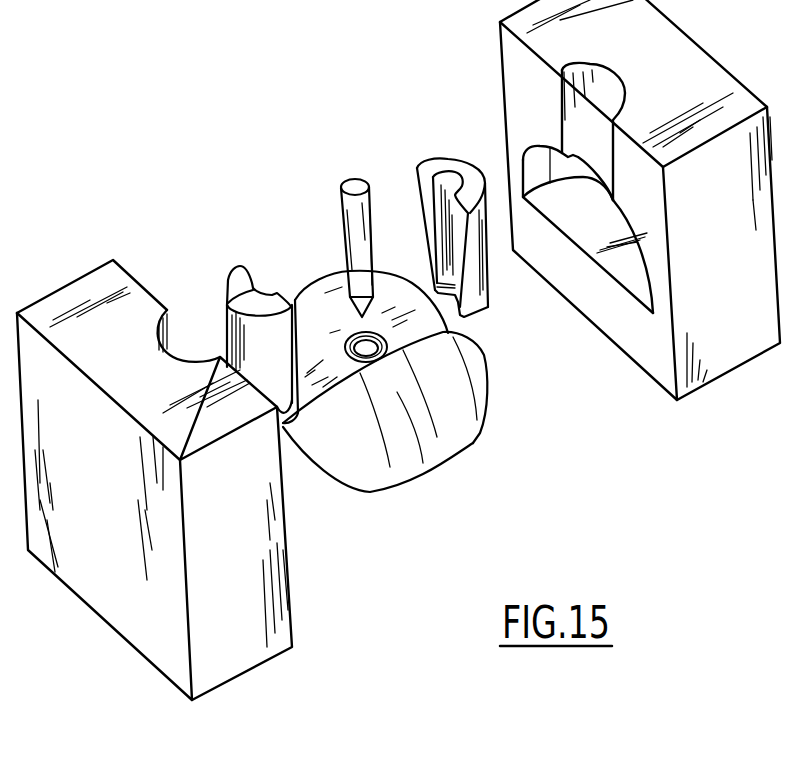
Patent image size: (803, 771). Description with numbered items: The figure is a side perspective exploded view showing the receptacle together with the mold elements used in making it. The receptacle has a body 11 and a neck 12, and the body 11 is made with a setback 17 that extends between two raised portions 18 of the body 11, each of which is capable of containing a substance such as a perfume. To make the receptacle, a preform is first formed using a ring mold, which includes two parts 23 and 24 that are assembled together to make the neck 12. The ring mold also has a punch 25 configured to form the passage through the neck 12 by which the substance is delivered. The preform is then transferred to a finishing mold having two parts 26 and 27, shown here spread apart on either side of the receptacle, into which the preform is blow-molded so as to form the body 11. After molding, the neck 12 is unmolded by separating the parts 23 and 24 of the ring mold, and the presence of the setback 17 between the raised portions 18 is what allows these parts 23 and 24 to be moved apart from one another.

The body 11 is at (463, 430).
The neck 12 is at (348, 363).
The setback 17 is at (313, 397).
The raised portions 18 is at (325, 290).
The ring mold part 23 is at (240, 283).
The ring mold part 24 is at (455, 160).
The punch 25 is at (353, 182).
The finishing mold part 26 is at (245, 647).
The finishing mold part 27 is at (730, 347).